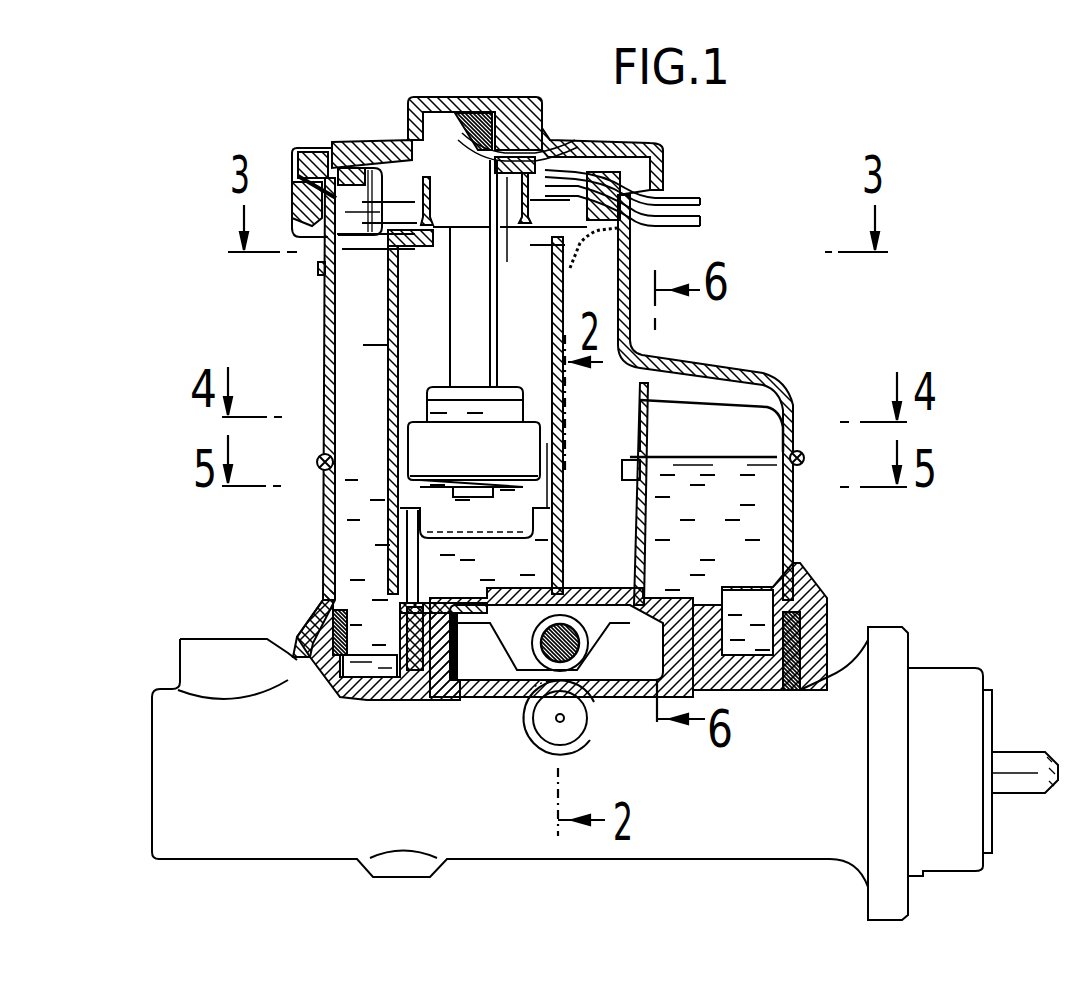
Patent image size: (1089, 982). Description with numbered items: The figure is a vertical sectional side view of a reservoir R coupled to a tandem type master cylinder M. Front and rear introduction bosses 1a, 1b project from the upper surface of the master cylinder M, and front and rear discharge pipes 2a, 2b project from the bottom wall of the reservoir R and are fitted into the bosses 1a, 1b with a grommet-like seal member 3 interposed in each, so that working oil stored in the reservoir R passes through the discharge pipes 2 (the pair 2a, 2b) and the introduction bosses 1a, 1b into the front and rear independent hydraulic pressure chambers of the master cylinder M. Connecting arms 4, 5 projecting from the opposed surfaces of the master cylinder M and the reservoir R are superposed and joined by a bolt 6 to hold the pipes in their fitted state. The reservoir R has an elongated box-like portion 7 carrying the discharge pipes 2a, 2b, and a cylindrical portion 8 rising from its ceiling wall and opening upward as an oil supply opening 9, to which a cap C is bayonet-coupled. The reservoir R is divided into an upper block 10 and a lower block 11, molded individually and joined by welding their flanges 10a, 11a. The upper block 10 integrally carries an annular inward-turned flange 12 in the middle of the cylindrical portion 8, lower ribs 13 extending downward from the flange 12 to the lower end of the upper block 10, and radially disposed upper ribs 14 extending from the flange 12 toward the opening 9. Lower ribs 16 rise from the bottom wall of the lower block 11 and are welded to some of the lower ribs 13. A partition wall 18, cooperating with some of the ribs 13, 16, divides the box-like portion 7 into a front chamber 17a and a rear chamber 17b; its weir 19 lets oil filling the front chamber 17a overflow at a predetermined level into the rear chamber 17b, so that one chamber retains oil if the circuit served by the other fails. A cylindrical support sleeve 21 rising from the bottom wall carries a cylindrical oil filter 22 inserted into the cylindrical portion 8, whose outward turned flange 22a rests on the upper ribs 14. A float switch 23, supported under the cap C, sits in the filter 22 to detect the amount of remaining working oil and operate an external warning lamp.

The tandem type master cylinder M is at (517, 812).
The front introduction boss 1a is at (295, 633).
The rear introduction boss 1b is at (822, 650).
The reservoir base 2 is at (546, 578).
The front discharge pipe 2a is at (350, 687).
The rear discharge pipe 2b is at (722, 595).
The grommet-like seal member 3 is at (323, 677).
The connecting arm 4 is at (473, 683).
The connecting arm 5 is at (590, 645).
The bolt 6 is at (550, 660).
The box-like portion 7 is at (787, 395).
The cylindrical portion 8 is at (635, 325).
The oil supply opening 9 is at (333, 172).
The upper block 10 is at (325, 335).
The welding flange 10a is at (323, 455).
The lower block 11 is at (327, 535).
The welding flange 11a is at (325, 465).
The inward-turned flange 12 is at (393, 288).
The lower ribs 13 is at (390, 343).
The upper ribs 14 is at (345, 262).
The lower ribs 16 is at (570, 567).
The front chamber 17a is at (392, 575).
The rear chamber 17b is at (717, 515).
The partition wall 18 is at (640, 550).
The weir 19 is at (650, 475).
The cylindrical support sleeve 21 is at (412, 568).
The cylindrical oil filter 22 is at (400, 405).
The outward turned flange 22a is at (375, 180).
The float switch 23 is at (488, 356).
The cap C is at (660, 155).
The reservoir R is at (727, 367).